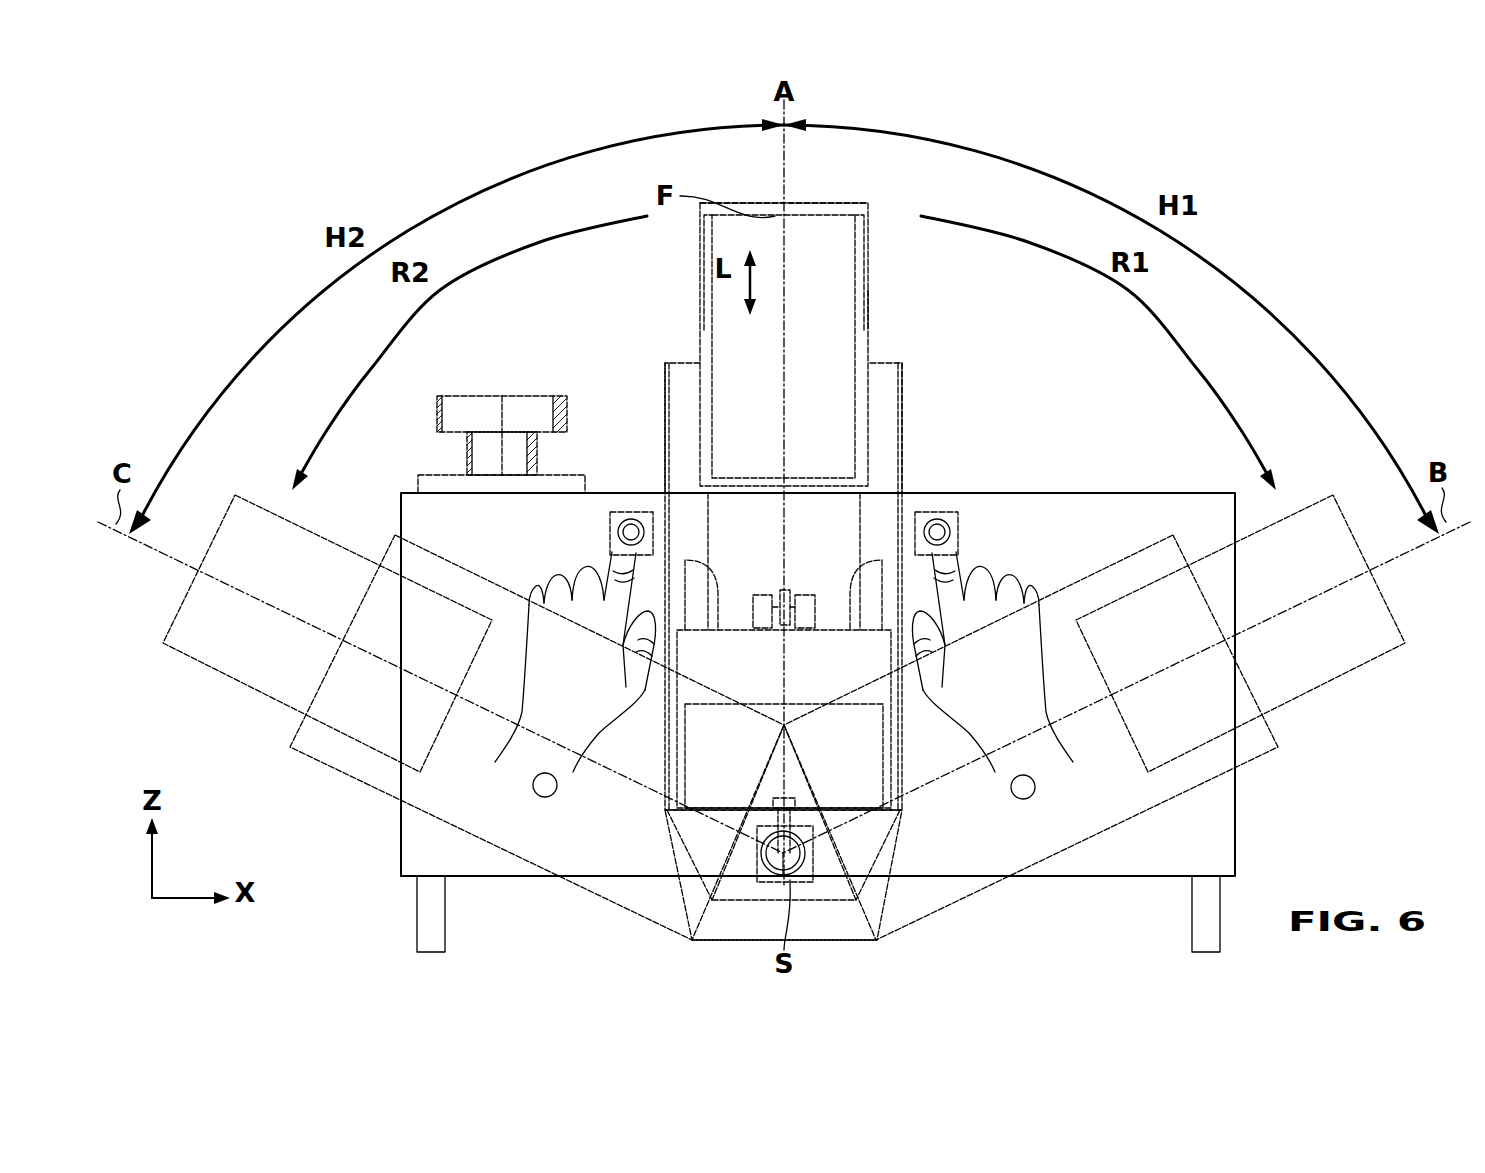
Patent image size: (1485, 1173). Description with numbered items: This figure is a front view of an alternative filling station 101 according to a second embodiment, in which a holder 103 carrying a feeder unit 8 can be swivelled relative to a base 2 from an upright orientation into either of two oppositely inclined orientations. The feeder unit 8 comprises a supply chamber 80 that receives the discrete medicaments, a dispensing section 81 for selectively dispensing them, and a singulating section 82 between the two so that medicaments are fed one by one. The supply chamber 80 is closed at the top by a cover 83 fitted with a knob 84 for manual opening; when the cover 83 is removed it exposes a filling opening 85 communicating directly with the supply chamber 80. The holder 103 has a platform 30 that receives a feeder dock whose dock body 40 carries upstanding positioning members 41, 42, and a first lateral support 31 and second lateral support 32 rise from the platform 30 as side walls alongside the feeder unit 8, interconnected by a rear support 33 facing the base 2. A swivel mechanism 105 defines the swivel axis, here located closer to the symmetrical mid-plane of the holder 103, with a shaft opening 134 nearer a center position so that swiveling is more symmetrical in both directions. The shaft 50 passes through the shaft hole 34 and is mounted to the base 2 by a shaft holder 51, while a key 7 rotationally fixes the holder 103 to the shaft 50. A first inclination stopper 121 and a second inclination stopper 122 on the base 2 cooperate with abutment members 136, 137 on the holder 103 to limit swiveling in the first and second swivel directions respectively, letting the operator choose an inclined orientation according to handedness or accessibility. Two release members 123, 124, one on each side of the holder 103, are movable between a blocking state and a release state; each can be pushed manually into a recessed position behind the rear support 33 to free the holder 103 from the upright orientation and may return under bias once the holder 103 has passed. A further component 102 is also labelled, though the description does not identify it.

The base 2 is at (1140, 508).
The key 7 is at (770, 800).
The feeder unit 8 is at (335, 762).
The platform 30 is at (690, 850).
The first lateral support 31 is at (663, 418).
The second lateral support 32 is at (900, 405).
The rear support 33 is at (688, 372).
The shaft hole 34 is at (748, 830).
The dock body 40 is at (850, 745).
The positioning member 41 is at (712, 598).
The positioning member 42 is at (858, 598).
The shaft 50 is at (825, 874).
The shaft holder 51 is at (752, 888).
The supply chamber 80 is at (862, 282).
The dispensing section 81 is at (880, 695).
The singulating section 82 is at (850, 507).
The cover 83 is at (420, 481).
The knob 84 is at (455, 405).
The filling opening 85 is at (815, 207).
The alternative filling station 101 is at (384, 188).
The base body 102 is at (410, 856).
The holder 103 is at (708, 874).
The swivel mechanism 105 is at (798, 856).
The first inclination stopper 121 is at (1020, 795).
The second inclination stopper 122 is at (548, 790).
The release member 123 is at (950, 512).
The release member 124 is at (633, 516).
The shaft opening 134 is at (803, 870).
The abutment member 136 is at (755, 615).
The abutment member 137 is at (810, 612).